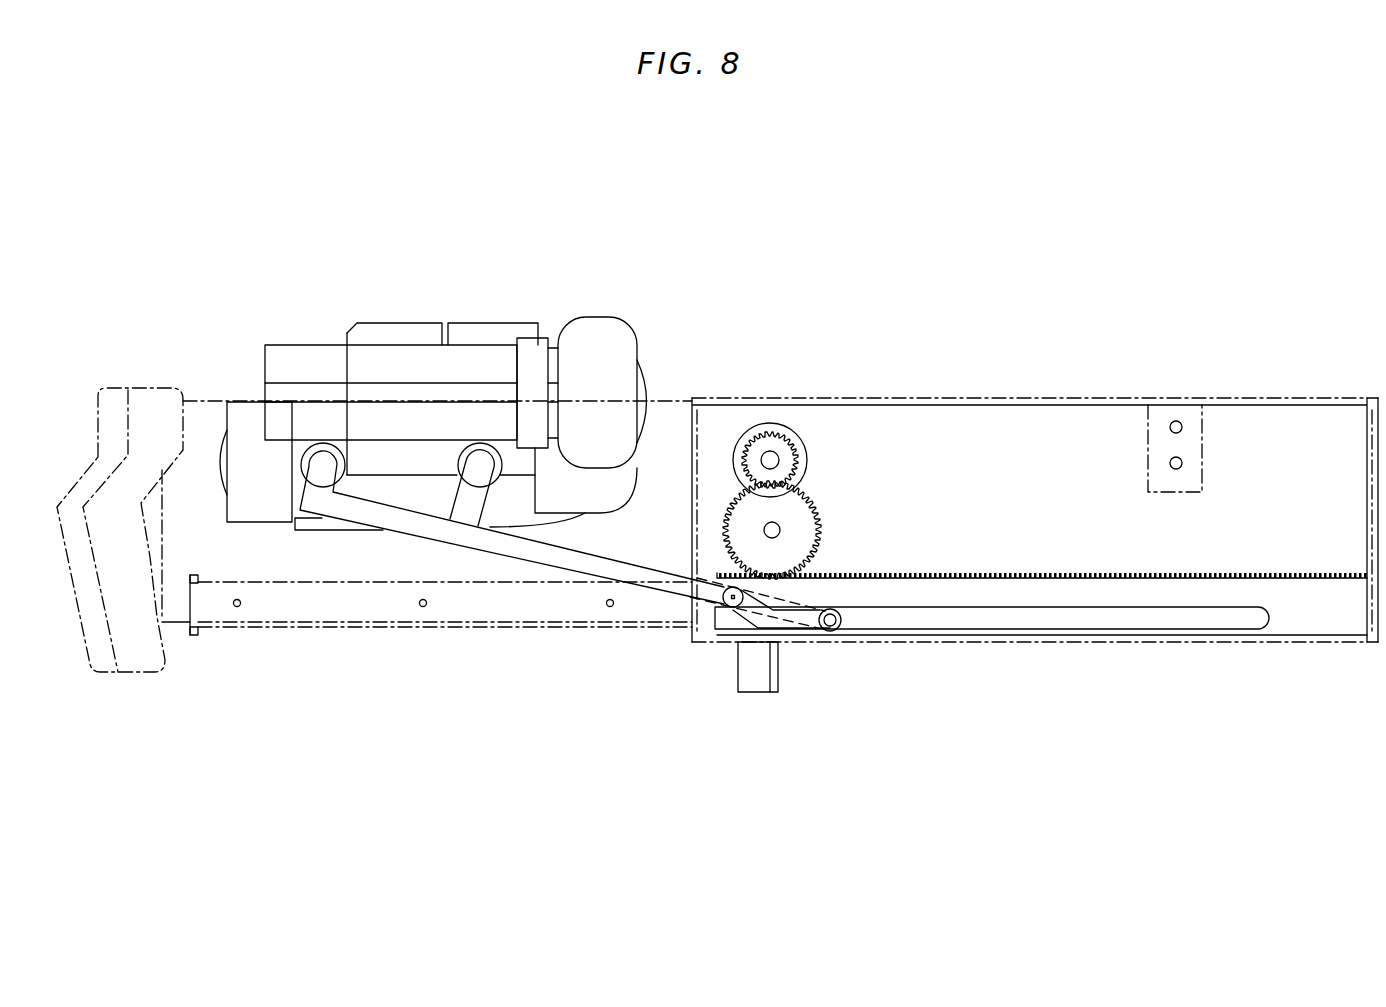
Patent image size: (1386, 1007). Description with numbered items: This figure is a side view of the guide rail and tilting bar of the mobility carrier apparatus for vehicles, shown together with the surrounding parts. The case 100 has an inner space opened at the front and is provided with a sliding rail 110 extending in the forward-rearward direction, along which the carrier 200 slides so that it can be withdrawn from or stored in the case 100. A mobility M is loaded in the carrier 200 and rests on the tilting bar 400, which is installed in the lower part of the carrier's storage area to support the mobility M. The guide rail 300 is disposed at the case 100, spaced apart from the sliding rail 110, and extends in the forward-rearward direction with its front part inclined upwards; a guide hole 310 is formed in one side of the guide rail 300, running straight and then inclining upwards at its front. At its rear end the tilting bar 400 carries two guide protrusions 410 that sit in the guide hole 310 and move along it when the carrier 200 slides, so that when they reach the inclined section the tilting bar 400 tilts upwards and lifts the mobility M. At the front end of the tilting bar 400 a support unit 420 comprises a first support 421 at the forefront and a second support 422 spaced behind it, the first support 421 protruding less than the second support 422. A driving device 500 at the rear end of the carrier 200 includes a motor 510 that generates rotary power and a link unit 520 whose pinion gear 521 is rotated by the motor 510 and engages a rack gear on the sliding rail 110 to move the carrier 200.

The case 100 is at (1035, 470).
The sliding rail 110 is at (1238, 573).
The carrier 200 is at (328, 648).
The guide rail 300 is at (1041, 670).
The guide hole 310 is at (947, 622).
The tilting bar 400 is at (650, 580).
The guide protrusion 410 is at (828, 632).
The support unit 420 is at (385, 329).
The first support 421 is at (323, 443).
The second support 422 is at (482, 443).
The mobility M is at (495, 360).
The driving device 500 is at (826, 399).
The motor 510 is at (762, 443).
The link unit 520 is at (826, 435).
The pinion gear 521 is at (804, 517).